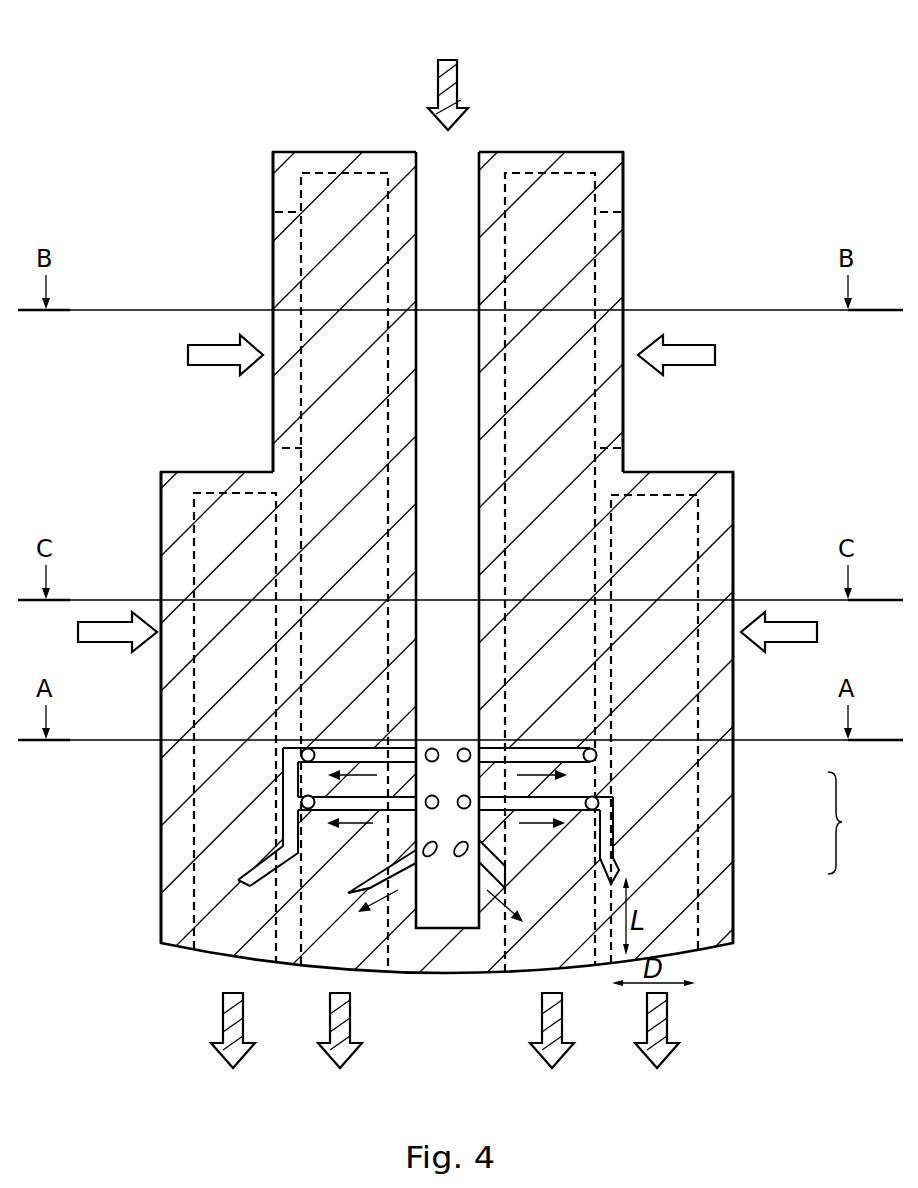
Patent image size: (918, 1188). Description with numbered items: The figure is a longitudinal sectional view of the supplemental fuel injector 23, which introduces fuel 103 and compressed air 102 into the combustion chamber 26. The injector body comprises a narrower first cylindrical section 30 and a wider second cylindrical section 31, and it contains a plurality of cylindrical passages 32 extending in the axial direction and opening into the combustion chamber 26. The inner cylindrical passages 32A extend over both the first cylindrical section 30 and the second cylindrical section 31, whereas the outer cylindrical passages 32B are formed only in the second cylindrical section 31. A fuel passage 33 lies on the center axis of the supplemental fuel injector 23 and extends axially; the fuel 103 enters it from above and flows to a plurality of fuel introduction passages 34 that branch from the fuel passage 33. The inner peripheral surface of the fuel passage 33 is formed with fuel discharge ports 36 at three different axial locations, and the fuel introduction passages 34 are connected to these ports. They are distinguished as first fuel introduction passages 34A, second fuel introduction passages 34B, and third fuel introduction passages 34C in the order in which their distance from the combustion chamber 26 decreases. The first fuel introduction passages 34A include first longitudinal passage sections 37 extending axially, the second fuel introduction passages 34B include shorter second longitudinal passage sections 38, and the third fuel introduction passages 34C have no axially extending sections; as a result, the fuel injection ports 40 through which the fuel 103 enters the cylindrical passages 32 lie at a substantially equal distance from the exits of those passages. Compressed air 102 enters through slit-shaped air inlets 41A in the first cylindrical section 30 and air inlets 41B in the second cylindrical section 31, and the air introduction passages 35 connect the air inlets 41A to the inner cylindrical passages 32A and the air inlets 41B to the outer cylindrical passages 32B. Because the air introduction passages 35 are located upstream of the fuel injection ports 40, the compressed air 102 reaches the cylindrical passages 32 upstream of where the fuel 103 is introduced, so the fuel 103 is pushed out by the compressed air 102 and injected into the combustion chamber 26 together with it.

The supplemental fuel injector 23 is at (717, 90).
The combustion chamber 26 is at (451, 1125).
The first cylindrical section 30 is at (625, 158).
The second cylindrical section 31 is at (735, 478).
The cylindrical passages 32 is at (449, 521).
The inner cylindrical passages 32A is at (546, 172).
The outer cylindrical passages 32B is at (665, 494).
The fuel passage 33 is at (461, 430).
The fuel introduction passages 34 is at (575, 835).
The first fuel introduction passages 34A is at (596, 752).
The second fuel introduction passages 34B is at (600, 805).
The third fuel introduction passages 34C is at (505, 866).
The air introduction passages 35 is at (770, 532).
The fuel discharge ports 36 is at (433, 762).
The first longitudinal passage sections 37 is at (283, 829).
The second longitudinal passage sections 38 is at (617, 860).
The fuel injection ports 40 is at (583, 985).
The air inlets 41A is at (663, 286).
The air inlets 41B is at (772, 575).
The compressed air 102 is at (447, 507).
The fuel 103 is at (448, 73).